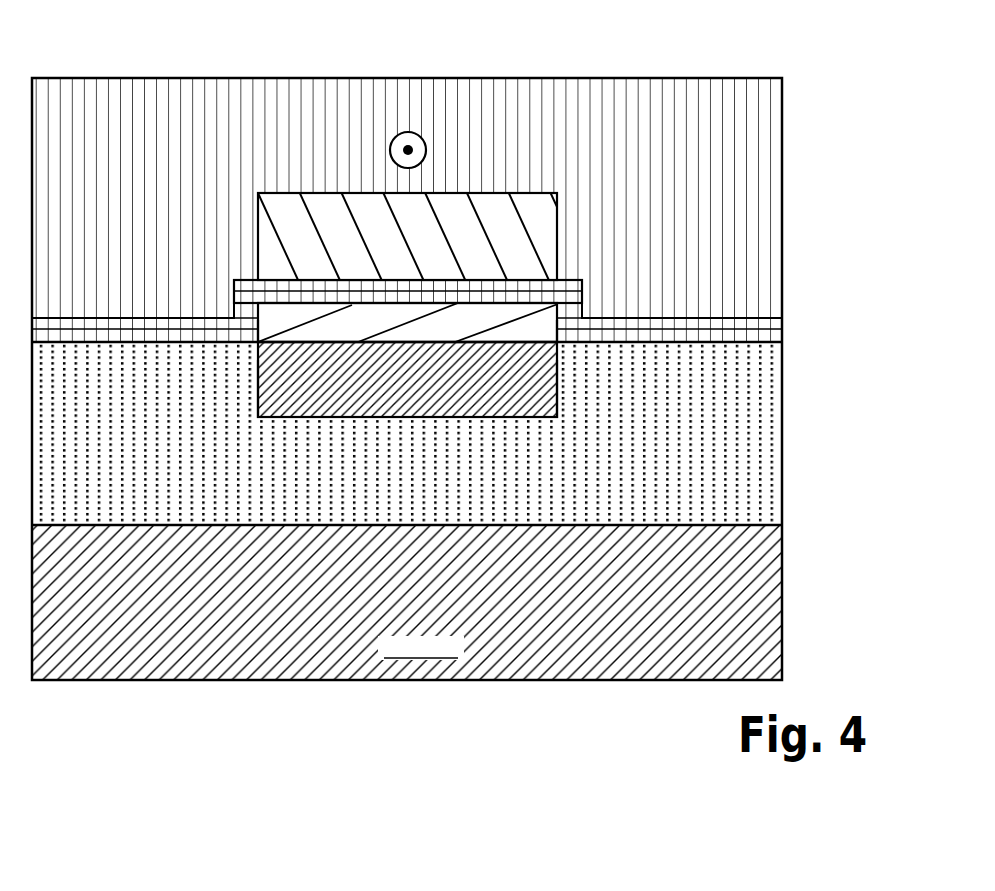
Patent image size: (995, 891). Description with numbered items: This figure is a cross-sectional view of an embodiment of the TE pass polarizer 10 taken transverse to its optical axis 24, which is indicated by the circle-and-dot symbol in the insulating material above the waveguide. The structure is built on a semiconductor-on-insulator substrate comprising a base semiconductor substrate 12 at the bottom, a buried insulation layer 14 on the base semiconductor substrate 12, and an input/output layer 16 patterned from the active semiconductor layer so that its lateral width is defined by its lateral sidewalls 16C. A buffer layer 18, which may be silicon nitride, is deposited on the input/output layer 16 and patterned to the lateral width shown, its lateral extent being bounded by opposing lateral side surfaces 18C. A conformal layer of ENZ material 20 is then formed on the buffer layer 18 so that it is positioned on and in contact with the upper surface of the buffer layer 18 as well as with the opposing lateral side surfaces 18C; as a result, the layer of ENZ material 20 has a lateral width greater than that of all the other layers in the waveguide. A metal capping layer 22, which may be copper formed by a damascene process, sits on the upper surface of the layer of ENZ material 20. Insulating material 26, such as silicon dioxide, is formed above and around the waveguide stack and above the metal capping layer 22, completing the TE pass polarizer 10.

The TE pass polarizer 10 is at (86, 66).
The base semiconductor substrate 12 is at (405, 592).
The buried insulation layer 14 is at (405, 484).
The input/output layer 16 is at (395, 390).
The lateral sidewalls 16C is at (259, 371).
The buffer layer 18 is at (395, 332).
The opposing lateral side surfaces 18C is at (259, 326).
The layer of ENZ material 20 is at (393, 302).
The metal capping layer 22 is at (393, 232).
The optical axis 24 is at (441, 136).
The insulating material 26 is at (150, 142).